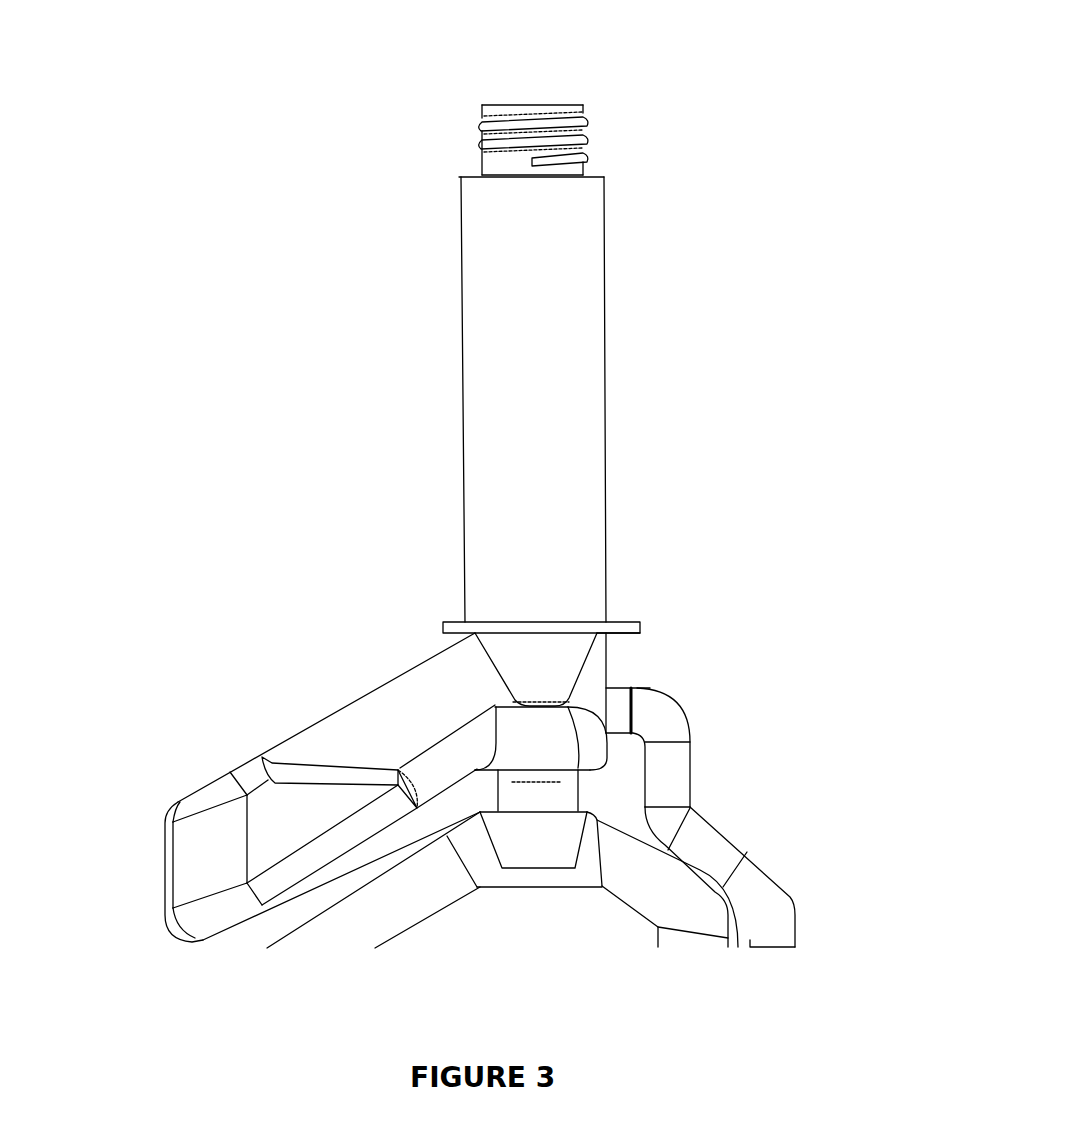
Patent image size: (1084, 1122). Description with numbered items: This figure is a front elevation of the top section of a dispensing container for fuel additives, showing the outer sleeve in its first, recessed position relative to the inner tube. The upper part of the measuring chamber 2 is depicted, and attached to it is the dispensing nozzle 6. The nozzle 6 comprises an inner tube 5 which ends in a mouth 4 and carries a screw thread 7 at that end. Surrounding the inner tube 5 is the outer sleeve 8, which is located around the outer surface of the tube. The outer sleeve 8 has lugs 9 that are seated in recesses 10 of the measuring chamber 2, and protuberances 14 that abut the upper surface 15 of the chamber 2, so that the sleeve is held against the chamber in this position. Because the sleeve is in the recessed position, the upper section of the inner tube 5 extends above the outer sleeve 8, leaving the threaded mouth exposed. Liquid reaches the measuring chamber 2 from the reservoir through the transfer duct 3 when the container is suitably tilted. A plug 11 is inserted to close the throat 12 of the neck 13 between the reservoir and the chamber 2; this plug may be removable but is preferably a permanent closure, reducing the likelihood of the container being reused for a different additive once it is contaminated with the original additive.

The measuring chamber 2 is at (372, 742).
The transfer duct 3 is at (752, 866).
The mouth 4 is at (535, 103).
The inner tube 5 is at (507, 163).
The dispensing nozzle 6 is at (655, 327).
The screw thread 7 is at (588, 136).
The outer sleeve 8 is at (530, 410).
The lugs 9 is at (538, 663).
The recesses 10 is at (580, 673).
The plug 11 is at (533, 730).
The throat 12 is at (582, 762).
The neck 13 is at (537, 822).
The protuberances 14 is at (623, 630).
The upper surface 15 is at (613, 638).